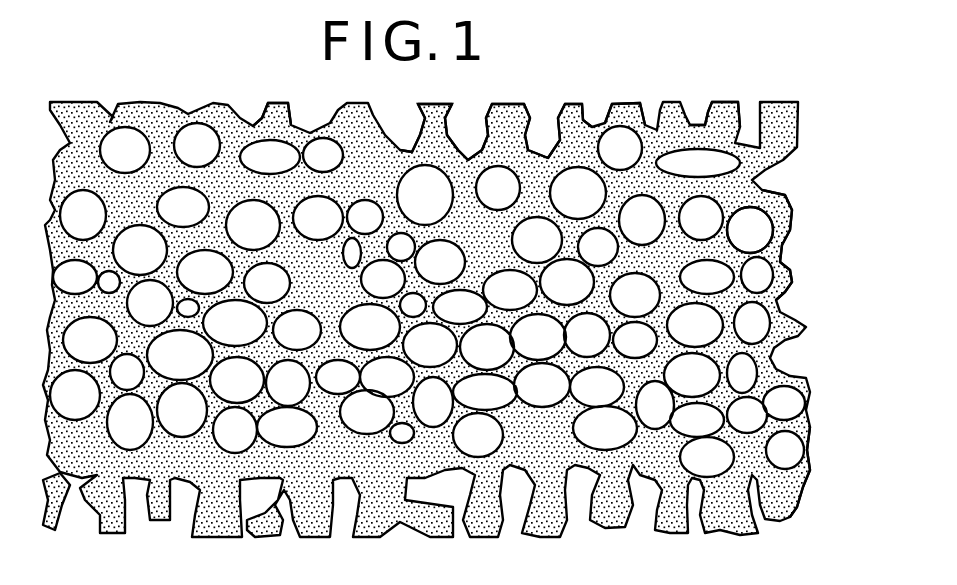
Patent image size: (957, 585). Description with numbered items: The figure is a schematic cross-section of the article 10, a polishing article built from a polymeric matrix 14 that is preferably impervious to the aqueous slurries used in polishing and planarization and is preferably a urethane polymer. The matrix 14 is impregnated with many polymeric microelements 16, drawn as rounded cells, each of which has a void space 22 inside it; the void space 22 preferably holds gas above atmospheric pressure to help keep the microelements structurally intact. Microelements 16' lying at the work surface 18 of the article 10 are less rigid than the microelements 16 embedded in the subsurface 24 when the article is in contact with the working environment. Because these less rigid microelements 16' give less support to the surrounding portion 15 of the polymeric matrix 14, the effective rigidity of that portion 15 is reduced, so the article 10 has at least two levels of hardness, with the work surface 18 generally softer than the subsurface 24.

The article 10 is at (834, 219).
The polymeric matrix 14 is at (793, 275).
The portion of the polymeric matrix 15 is at (440, 104).
The polymeric microelement 16 is at (799, 226).
The polymeric microelement at the work surface 16' is at (672, 107).
The work surface 18 is at (283, 104).
The void space 22 is at (745, 224).
The subsurface 24 is at (808, 440).